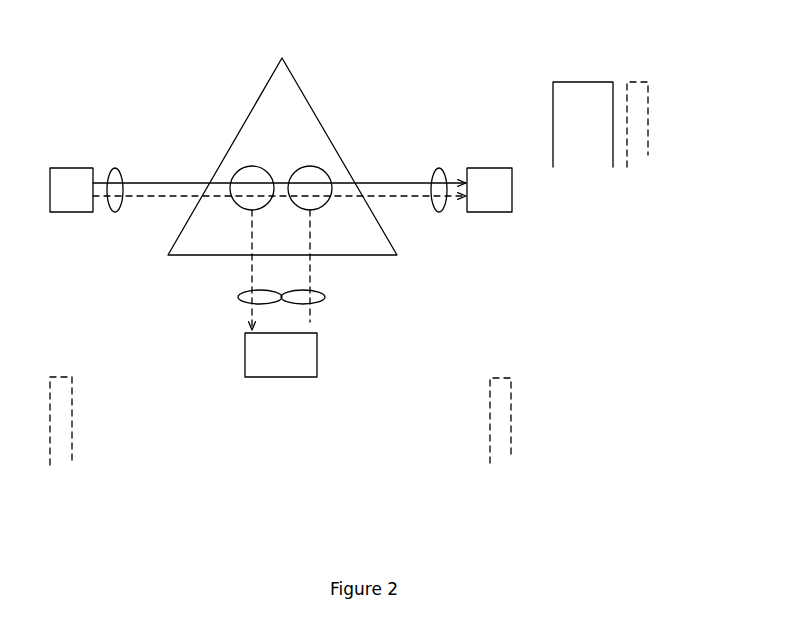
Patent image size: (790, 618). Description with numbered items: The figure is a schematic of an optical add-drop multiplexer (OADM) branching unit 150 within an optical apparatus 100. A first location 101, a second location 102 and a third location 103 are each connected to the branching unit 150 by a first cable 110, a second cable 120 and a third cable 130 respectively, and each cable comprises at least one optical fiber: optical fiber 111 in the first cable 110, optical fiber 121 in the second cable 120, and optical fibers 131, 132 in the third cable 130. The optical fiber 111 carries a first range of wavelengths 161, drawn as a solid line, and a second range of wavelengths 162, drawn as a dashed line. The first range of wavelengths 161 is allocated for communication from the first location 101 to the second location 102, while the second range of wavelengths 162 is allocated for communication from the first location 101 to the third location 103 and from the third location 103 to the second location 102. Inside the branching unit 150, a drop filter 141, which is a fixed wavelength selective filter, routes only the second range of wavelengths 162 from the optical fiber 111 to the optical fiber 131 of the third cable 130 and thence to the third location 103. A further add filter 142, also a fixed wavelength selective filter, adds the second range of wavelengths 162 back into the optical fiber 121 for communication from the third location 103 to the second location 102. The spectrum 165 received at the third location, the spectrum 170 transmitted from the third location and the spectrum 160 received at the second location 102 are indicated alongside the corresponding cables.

The optical apparatus 100 is at (397, 118).
The first location 101 is at (65, 213).
The second location 102 is at (512, 197).
The third location 103 is at (302, 377).
The first cable 110 is at (152, 173).
The optical fiber 111 is at (115, 168).
The second cable 120 is at (367, 160).
The optical fiber 121 is at (437, 210).
The third cable 130 is at (245, 312).
The optical fiber 131 is at (240, 298).
The optical fiber 132 is at (323, 298).
The drop filter 141 is at (240, 205).
The add filter 142 is at (323, 205).
The branching unit 150 is at (248, 118).
The spectrum received at the second location 160 is at (640, 192).
The first range of wavelengths 161 is at (570, 80).
The second range of wavelengths 162 is at (640, 80).
The spectrum received at the third location 165 is at (65, 478).
The spectrum transmitted from the third location 170 is at (497, 480).